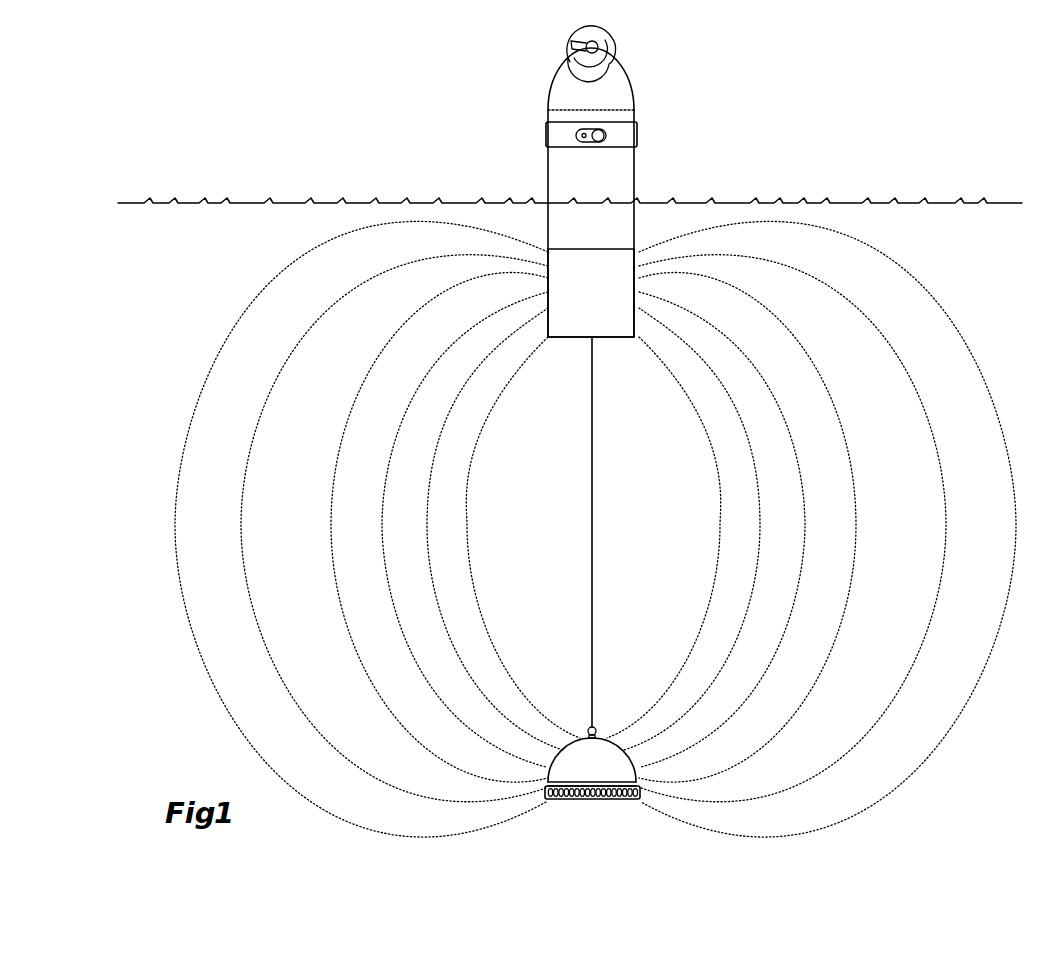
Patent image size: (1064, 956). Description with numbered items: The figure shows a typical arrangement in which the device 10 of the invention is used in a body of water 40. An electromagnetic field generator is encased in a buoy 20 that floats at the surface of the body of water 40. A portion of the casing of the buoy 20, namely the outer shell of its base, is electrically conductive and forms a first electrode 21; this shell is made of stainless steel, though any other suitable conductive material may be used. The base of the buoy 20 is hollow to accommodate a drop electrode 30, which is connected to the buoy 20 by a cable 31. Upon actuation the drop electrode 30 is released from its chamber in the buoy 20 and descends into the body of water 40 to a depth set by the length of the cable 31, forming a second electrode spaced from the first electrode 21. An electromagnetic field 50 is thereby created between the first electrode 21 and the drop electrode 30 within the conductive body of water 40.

The device 10 is at (599, 412).
The buoy 20 is at (555, 220).
The first electrode 21 is at (609, 306).
The drop electrode 30 is at (604, 747).
The cable 31 is at (594, 520).
The body of water 40 is at (304, 202).
The electromagnetic field 50 is at (1016, 519).